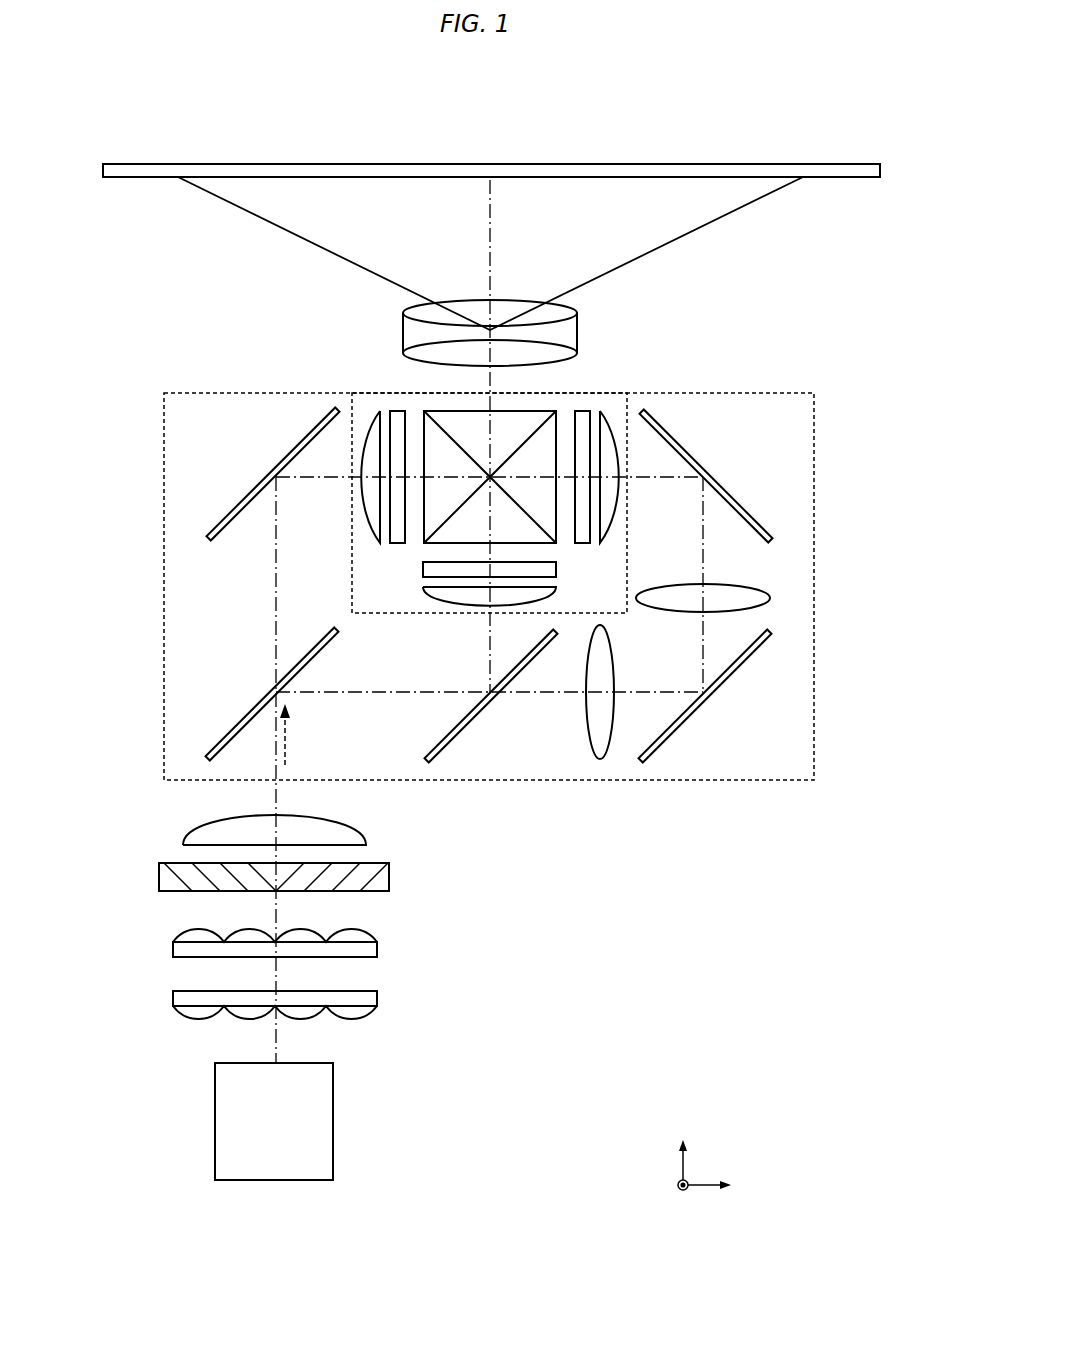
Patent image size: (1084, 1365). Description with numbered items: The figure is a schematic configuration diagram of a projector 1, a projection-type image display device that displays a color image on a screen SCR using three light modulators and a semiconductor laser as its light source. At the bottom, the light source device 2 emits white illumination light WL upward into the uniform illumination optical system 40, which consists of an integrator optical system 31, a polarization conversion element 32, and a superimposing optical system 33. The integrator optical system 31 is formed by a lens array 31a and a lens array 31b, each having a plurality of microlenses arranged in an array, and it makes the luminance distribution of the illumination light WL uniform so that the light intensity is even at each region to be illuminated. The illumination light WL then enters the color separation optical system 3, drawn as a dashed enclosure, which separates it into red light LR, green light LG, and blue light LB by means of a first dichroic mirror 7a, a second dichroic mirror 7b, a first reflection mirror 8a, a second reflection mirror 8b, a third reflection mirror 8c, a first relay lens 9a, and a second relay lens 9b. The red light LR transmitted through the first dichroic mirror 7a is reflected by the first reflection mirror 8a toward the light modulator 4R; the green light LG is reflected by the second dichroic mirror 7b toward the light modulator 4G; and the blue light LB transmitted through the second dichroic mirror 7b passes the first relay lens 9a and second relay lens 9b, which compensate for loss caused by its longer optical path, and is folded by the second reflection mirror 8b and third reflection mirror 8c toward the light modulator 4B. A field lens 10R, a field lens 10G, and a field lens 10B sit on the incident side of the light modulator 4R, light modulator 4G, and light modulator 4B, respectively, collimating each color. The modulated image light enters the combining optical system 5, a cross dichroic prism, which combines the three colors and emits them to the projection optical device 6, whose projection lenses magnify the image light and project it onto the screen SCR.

The projector 1 is at (504, 689).
The light source device 2 is at (333, 1108).
The color separation optical system 3 is at (164, 517).
The light modulator 4R is at (397, 410).
The light modulator 4G is at (425, 570).
The light modulator 4B is at (582, 410).
The combining optical system 5 is at (512, 420).
The projection optical device 6 is at (472, 312).
The first dichroic mirror 7a is at (240, 723).
The second dichroic mirror 7b is at (462, 735).
The first reflection mirror 8a is at (250, 493).
The second reflection mirror 8b is at (733, 685).
The third reflection mirror 8c is at (730, 495).
The first relay lens 9a is at (585, 712).
The second relay lens 9b is at (725, 590).
The field lens 10R is at (375, 410).
The field lens 10G is at (425, 597).
The field lens 10B is at (605, 410).
The integrator optical system 31 is at (346, 976).
The lens array 31a is at (377, 998).
The lens array 31b is at (377, 948).
The polarization conversion element 32 is at (389, 877).
The superimposing optical system 33 is at (367, 823).
The uniform illumination optical system 40 is at (366, 919).
The screen SCR is at (840, 172).
The red light LR is at (276, 600).
The green light LG is at (490, 650).
The blue light LB is at (703, 652).
The illumination light WL is at (288, 742).